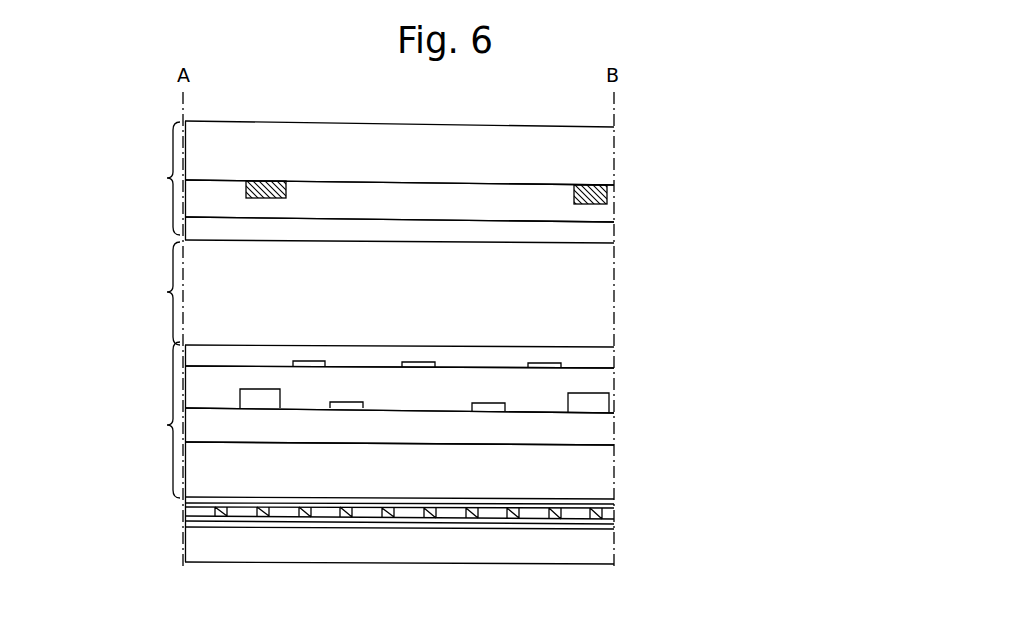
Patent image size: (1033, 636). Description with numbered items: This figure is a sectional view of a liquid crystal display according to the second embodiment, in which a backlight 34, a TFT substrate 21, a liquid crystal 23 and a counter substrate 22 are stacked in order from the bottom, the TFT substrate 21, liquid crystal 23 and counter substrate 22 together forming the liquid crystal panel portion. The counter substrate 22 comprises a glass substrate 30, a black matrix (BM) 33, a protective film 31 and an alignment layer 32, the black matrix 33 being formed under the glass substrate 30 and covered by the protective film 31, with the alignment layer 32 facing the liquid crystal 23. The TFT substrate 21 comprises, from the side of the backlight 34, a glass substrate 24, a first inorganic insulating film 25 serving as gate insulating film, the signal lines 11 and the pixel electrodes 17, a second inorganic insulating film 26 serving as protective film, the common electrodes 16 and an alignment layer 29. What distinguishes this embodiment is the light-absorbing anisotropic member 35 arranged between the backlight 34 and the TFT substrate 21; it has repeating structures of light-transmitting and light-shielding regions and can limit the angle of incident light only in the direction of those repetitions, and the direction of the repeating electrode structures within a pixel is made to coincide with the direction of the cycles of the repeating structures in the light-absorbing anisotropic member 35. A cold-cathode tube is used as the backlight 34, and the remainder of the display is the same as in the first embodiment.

The signal line 11 is at (258, 395).
The common electrode 16 is at (311, 361).
The pixel electrode 17 is at (498, 404).
The TFT substrate 21 is at (112, 420).
The counter substrate 22 is at (113, 178).
The liquid crystal 23 is at (126, 293).
The glass substrate 24 is at (600, 488).
The first inorganic insulating film 25 is at (600, 423).
The second inorganic insulating film 26 is at (600, 378).
The alignment layer 29 is at (600, 350).
The glass substrate 30 is at (600, 147).
The protective film 31 is at (600, 219).
The alignment layer 32 is at (600, 238).
The black matrix (BM) 33 is at (263, 181).
The backlight 34 is at (600, 553).
The light-absorbing anisotropic member 35 is at (600, 518).